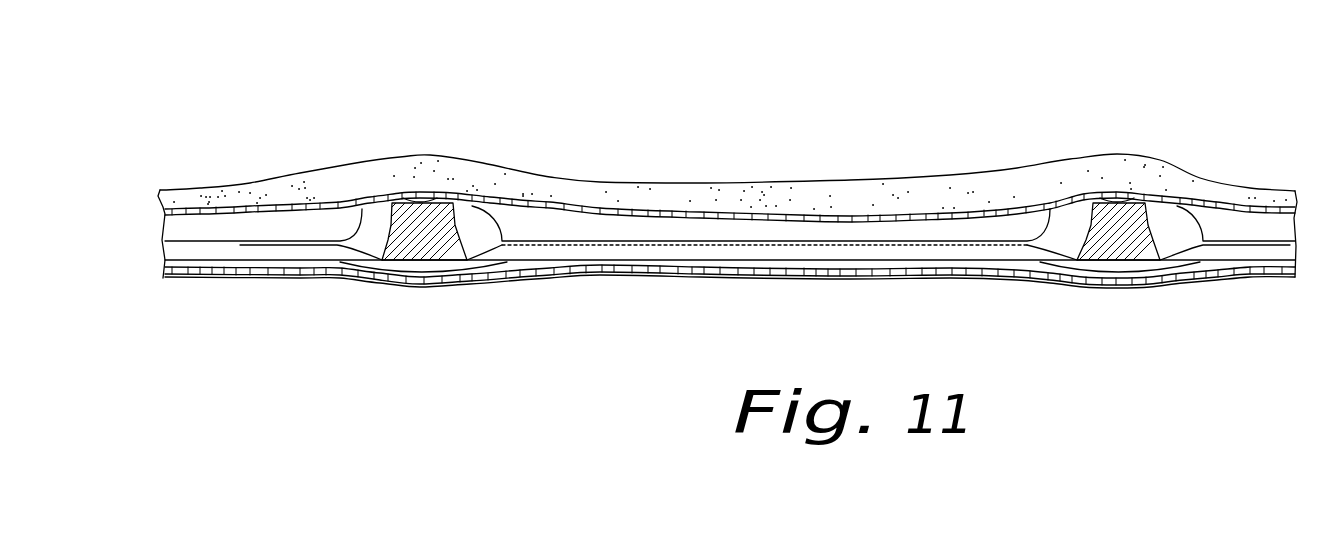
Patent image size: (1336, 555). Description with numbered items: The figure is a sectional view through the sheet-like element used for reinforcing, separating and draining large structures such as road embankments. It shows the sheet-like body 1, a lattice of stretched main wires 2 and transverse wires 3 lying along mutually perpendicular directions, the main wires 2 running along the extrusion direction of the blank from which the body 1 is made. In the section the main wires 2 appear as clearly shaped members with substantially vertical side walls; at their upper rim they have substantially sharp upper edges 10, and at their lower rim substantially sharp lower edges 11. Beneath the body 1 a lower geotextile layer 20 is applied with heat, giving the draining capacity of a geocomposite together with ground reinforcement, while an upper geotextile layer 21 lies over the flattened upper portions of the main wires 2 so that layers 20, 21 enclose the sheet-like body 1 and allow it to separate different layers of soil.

The sheet-like body 1 is at (858, 135).
The main wires 2 is at (455, 223).
The transverse wires 3 is at (613, 256).
The upper edges 10 is at (1050, 205).
The lower edges 11 is at (1065, 262).
The lower geotextile layer 20 is at (703, 272).
The upper geotextile layer 21 is at (742, 193).